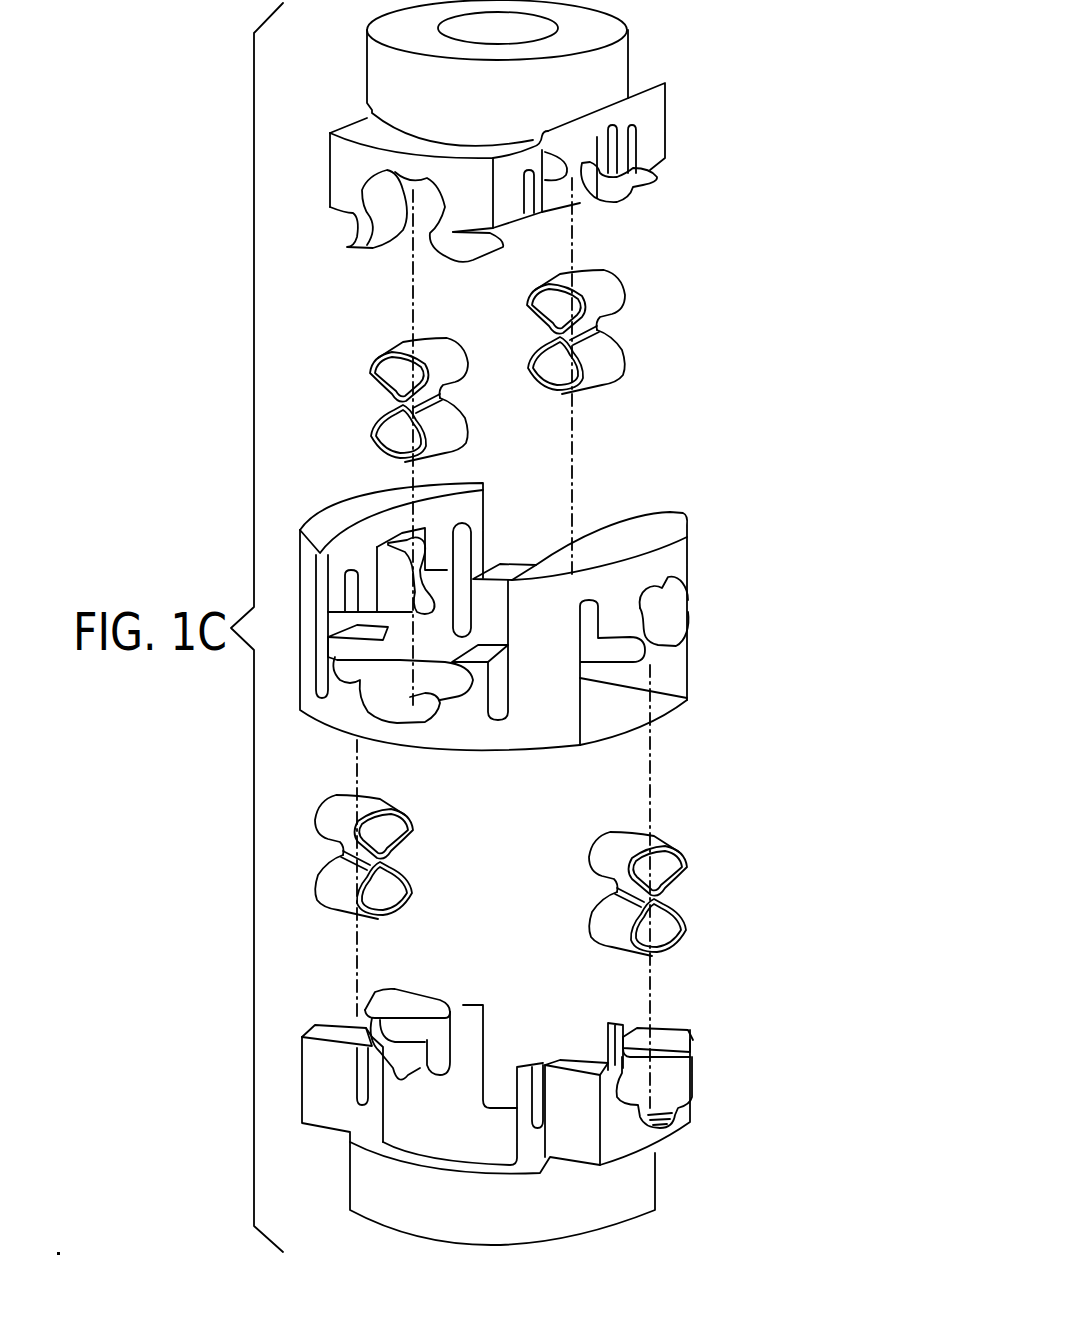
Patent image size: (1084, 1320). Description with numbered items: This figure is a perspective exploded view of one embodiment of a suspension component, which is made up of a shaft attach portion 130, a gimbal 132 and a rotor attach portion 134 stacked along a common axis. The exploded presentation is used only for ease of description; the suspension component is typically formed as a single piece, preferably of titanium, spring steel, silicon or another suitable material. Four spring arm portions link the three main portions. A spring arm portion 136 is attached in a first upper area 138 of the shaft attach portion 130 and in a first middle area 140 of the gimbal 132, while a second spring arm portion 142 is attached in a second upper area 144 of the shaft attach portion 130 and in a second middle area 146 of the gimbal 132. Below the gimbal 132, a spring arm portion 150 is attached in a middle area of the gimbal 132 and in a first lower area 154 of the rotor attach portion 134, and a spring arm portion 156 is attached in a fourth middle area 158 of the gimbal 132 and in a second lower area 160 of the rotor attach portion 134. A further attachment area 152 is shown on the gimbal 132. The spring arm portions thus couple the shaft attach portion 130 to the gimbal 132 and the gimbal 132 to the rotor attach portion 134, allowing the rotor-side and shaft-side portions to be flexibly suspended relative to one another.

The shaft attach portion 130 is at (647, 82).
The gimbal 132 is at (688, 563).
The rotor attach portion 134 is at (657, 1178).
The spring arm portion 136 is at (372, 393).
The first upper area 138 is at (405, 263).
The first middle area 140 is at (381, 702).
The spring arm portion 142 is at (605, 307).
The second upper area 144 is at (558, 192).
The second middle area 146 is at (515, 556).
The spring arm portion 150 is at (405, 867).
The retention recess with spring 152 is at (407, 558).
The first lower area 154 is at (341, 1013).
The spring arm portion 156 is at (680, 885).
The fourth middle area 158 is at (677, 610).
The second lower area 160 is at (678, 1098).